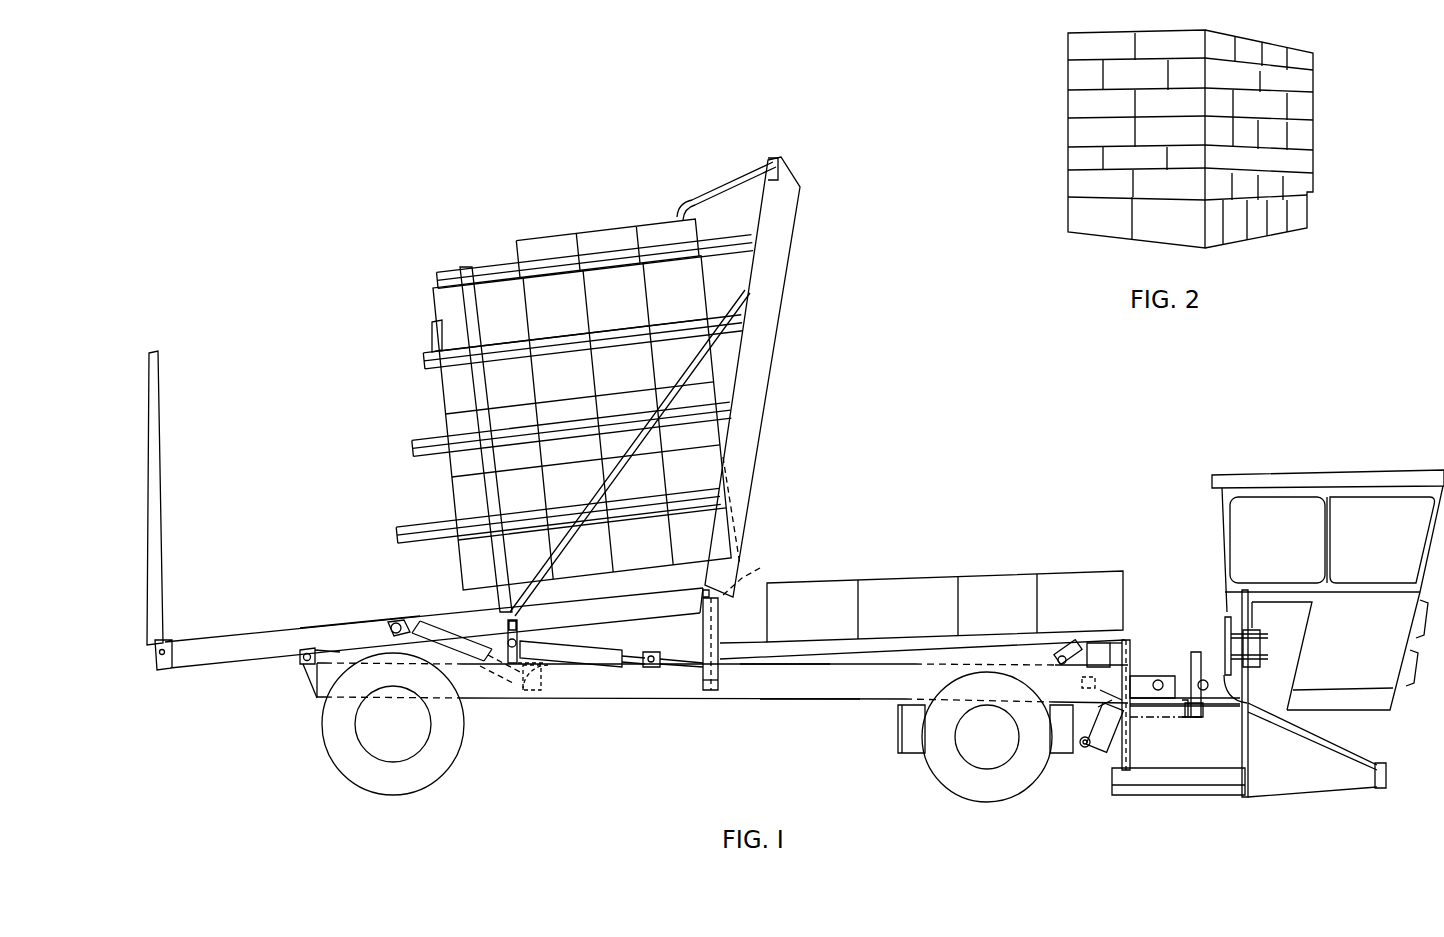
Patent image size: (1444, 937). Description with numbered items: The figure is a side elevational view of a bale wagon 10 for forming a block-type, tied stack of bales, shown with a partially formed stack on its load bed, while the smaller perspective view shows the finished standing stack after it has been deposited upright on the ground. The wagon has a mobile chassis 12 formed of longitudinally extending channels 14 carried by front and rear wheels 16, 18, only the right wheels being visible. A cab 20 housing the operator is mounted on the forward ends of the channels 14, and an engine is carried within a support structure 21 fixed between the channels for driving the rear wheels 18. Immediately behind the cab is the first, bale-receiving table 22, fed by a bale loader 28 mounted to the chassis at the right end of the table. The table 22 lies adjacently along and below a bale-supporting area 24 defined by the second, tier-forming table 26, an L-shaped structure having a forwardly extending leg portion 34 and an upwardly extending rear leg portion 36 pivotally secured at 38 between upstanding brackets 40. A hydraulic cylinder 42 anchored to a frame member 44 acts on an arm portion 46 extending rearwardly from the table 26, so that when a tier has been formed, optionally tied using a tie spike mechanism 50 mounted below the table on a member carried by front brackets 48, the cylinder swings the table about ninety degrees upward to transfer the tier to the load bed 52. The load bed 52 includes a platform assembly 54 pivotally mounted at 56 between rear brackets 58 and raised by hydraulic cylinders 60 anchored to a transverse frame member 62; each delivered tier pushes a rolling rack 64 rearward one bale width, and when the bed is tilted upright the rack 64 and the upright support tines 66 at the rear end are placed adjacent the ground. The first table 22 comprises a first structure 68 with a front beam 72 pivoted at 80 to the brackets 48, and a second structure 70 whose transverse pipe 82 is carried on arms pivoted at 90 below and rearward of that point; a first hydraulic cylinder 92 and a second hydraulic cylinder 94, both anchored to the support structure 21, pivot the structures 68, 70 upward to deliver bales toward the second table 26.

The bale wagon 10 is at (1003, 382).
The mobile chassis 12 is at (735, 697).
The longitudinally extending channels 14 is at (808, 699).
The front wheels 16 is at (922, 762).
The rear wheels 18 is at (323, 737).
The cab 20 is at (1298, 475).
The support structure 21 is at (897, 735).
The first bale-receiving table 22 is at (1180, 660).
The bale-supporting area 24 is at (958, 636).
The second tier-forming table 26 is at (870, 648).
The bale loader 28 is at (1157, 796).
The forwardly extending leg portion 34 is at (782, 664).
The upwardly extending rear leg portion 36 is at (703, 617).
The pivot 38 is at (745, 576).
The upstanding brackets 40 is at (707, 690).
The hydraulic cylinder 42 is at (566, 651).
The frame member 44 is at (520, 626).
The arm portion 46 is at (655, 662).
The front brackets 48 is at (1093, 647).
The tie spike mechanism 50 is at (1071, 640).
The load bed 52 is at (291, 636).
The platform assembly 54 is at (362, 612).
The pivot 56 is at (300, 661).
The rear brackets 58 is at (308, 676).
The hydraulic cylinders 60 is at (497, 690).
The transverse frame member 62 is at (545, 691).
The rolling rack 64 is at (433, 347).
The upright support tines 66 is at (161, 353).
The first structure 68 is at (1176, 705).
The second structure 70 is at (1150, 674).
The front beam 72 is at (1204, 680).
The pivot 80 is at (1128, 640).
The transverse pipe 82 is at (1158, 700).
The pivot 90 is at (1083, 684).
The first hydraulic cylinder 92 is at (1107, 748).
The second hydraulic cylinder 94 is at (1081, 746).